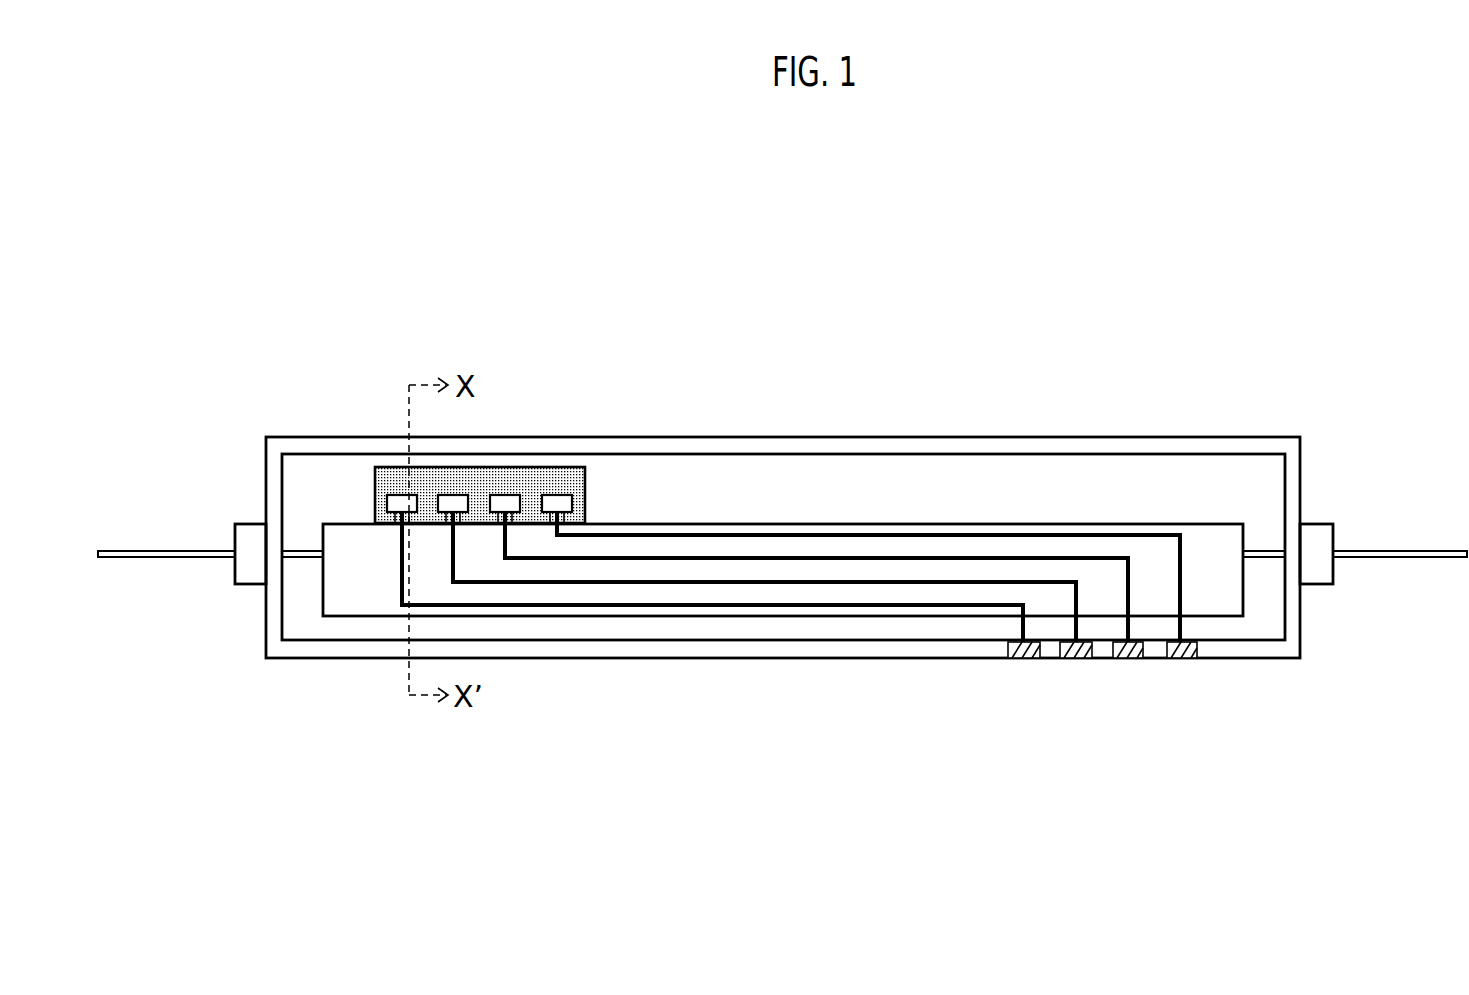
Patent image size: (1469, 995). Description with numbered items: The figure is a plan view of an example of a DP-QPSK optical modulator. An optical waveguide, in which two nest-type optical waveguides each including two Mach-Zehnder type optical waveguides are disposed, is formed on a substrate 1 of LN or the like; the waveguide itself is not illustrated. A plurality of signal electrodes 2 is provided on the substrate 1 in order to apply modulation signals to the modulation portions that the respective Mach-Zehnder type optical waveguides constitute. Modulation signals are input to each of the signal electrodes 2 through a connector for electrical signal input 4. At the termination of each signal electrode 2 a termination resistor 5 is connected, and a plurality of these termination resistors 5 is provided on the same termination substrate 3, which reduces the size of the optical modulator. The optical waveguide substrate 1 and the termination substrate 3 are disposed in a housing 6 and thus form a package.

The substrate (optical waveguide substrate) 1 is at (1215, 523).
The signal electrode 2 is at (1108, 535).
The termination substrate 3 is at (502, 480).
The connector for electrical signal input 4 is at (1183, 658).
The termination resistor 5 is at (553, 493).
The housing 6 is at (593, 650).